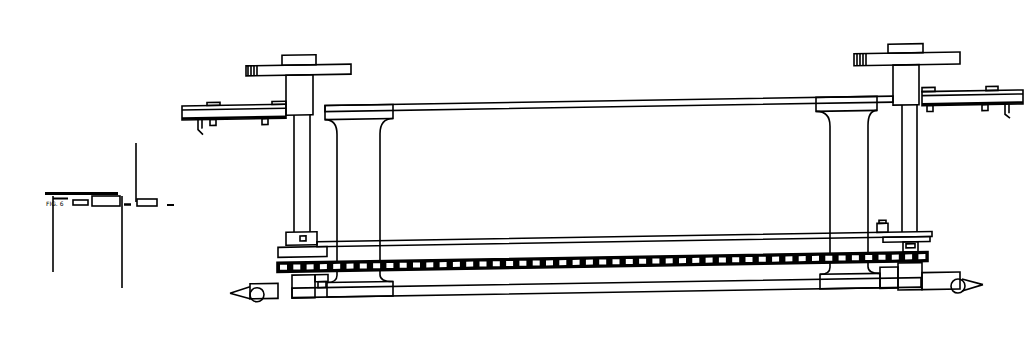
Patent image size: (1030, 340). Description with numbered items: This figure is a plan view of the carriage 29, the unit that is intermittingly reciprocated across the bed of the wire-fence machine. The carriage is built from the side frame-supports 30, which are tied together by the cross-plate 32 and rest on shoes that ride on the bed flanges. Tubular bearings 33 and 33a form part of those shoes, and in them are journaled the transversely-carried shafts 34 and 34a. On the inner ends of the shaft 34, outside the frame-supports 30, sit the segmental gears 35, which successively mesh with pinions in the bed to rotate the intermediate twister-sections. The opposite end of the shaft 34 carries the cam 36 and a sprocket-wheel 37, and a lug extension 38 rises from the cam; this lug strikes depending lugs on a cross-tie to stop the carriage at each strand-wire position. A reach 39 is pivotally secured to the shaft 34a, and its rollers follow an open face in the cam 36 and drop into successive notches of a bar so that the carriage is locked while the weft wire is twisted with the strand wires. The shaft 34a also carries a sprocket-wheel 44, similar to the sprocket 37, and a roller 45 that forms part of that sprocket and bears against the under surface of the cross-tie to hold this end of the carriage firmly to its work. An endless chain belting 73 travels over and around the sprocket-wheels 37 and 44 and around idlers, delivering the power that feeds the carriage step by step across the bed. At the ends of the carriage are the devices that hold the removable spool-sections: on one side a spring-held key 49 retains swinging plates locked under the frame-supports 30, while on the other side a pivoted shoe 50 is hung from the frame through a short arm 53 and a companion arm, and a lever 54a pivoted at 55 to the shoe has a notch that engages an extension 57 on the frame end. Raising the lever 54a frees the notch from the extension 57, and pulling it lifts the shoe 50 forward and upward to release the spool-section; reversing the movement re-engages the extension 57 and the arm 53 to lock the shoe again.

The carriage 29 is at (606, 206).
The side frame-supports 30 is at (724, 108).
The cross-plate 32 is at (602, 196).
The tubular bearing 33 is at (900, 78).
The tubular bearing 33a is at (305, 94).
The shaft 34 is at (912, 182).
The shaft 34a is at (293, 179).
The segmental gears 35 is at (338, 72).
The cam 36 is at (924, 233).
The sprocket-wheel 37 is at (933, 256).
The lug extension 38 is at (872, 270).
The reach 39 is at (496, 240).
The sprocket-wheel 44 is at (276, 267).
The roller 45 is at (278, 251).
The key 49 is at (240, 292).
The shoe 50 is at (197, 96).
The short arm 53 is at (258, 98).
The lever 54a is at (1025, 140).
The pivot 55 is at (268, 124).
The extension 57 is at (215, 126).
The endless chain belting 73 is at (648, 256).